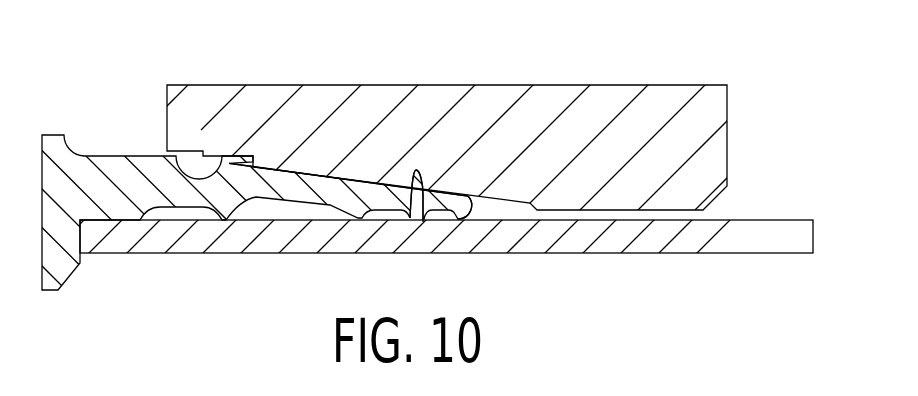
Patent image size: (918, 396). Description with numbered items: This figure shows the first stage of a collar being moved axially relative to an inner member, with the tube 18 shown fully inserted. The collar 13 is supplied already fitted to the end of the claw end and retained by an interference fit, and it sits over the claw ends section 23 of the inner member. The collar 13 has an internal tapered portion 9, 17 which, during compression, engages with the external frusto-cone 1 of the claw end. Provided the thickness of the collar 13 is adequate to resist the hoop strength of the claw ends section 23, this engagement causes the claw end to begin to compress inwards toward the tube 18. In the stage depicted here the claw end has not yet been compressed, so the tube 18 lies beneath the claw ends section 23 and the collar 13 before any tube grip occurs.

The external frusto-cone 1 is at (420, 253).
The internal tapered portion 9 is at (378, 120).
The collar 13 is at (333, 97).
The internal tapered portion 17 is at (440, 183).
The tube 18 is at (130, 257).
The claw ends section 23 is at (269, 165).